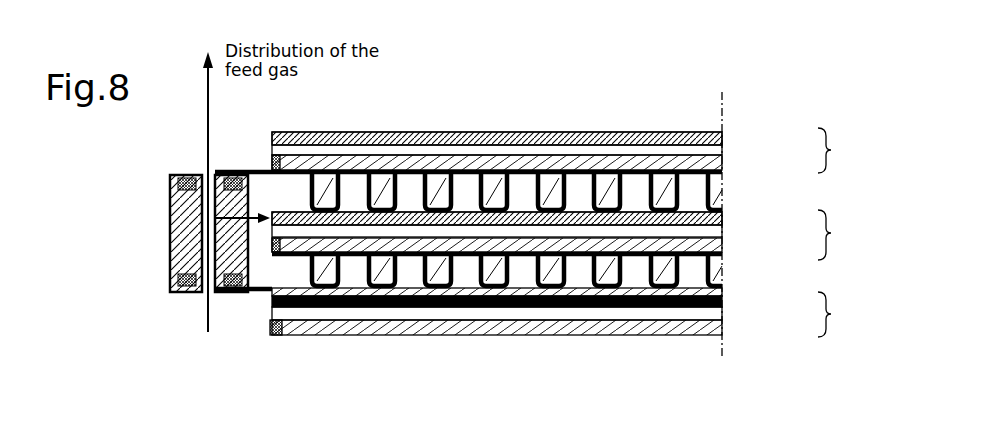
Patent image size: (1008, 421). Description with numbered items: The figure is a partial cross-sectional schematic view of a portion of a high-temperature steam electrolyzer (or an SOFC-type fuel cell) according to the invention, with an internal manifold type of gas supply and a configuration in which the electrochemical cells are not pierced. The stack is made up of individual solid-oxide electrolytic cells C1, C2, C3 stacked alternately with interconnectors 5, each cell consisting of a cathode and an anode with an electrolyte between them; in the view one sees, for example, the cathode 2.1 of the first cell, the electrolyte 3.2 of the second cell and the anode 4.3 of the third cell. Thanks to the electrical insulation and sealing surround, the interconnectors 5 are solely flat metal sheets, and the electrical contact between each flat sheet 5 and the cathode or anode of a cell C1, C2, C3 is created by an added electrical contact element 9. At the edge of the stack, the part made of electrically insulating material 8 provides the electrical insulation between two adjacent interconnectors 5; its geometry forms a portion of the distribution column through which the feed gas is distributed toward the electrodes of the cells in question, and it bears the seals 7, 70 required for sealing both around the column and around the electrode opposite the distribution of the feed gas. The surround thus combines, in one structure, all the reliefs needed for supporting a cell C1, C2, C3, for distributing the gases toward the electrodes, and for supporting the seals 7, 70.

The part made of electrically insulating material 8 is at (180, 230).
The seal 70 is at (170, 177).
The interconnector 5 is at (195, 175).
The seal 7 is at (292, 162).
The electrical contact element 9 is at (676, 190).
The cathode 2.1 is at (722, 134).
The electrolyte 3.2 is at (713, 230).
The anode 4.3 is at (722, 327).
The electrolytic cell C1 is at (840, 150).
The electrolytic cell C2 is at (840, 235).
The electrolytic cell C3 is at (840, 314).